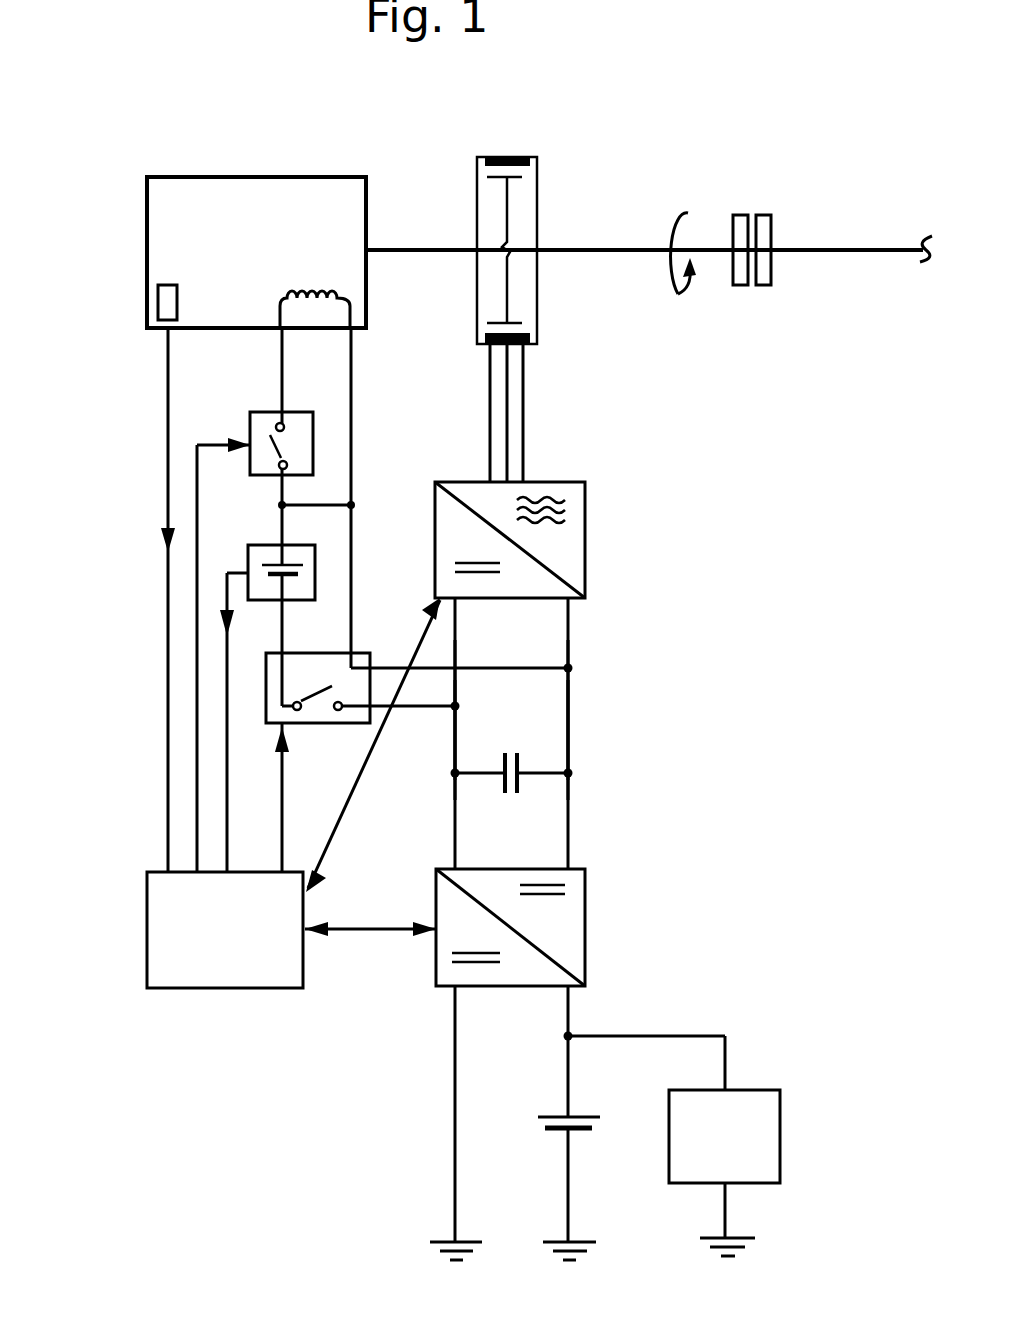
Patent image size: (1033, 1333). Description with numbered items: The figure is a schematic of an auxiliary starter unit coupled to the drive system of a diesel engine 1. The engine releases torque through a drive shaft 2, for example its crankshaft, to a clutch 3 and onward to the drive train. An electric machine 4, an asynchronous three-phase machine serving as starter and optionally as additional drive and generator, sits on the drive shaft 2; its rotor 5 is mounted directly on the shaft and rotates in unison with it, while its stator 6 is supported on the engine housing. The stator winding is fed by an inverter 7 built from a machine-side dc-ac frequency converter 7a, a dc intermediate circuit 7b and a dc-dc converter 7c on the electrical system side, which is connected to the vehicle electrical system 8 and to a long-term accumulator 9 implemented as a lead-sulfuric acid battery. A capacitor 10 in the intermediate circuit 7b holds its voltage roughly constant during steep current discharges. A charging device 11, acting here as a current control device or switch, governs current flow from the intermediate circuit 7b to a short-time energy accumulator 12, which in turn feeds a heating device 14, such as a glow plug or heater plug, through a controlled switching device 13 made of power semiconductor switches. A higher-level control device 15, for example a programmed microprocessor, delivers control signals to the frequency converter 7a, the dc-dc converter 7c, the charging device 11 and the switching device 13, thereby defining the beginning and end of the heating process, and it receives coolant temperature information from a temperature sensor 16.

The diesel engine 1 is at (287, 192).
The drive shaft 2 is at (596, 247).
The clutch 3 is at (748, 210).
The electric machine 4 is at (549, 172).
The rotor 5 is at (507, 291).
The stator 6 is at (537, 338).
The inverter 7 is at (600, 700).
The dc-ac frequency converter 7a is at (588, 540).
The dc intermediate circuit 7b is at (570, 727).
The dc-dc converter 7c is at (588, 920).
The vehicle electrical system 8 is at (782, 1127).
The electrical system long-term accumulator 9 is at (538, 1121).
The capacitor 10 is at (518, 793).
The charging device 11 is at (315, 710).
The energy accumulator 12 is at (252, 545).
The controlled switching device 13 is at (255, 412).
The heating device 14 is at (323, 296).
The control device 15 is at (228, 990).
The temperature sensor 16 is at (165, 300).